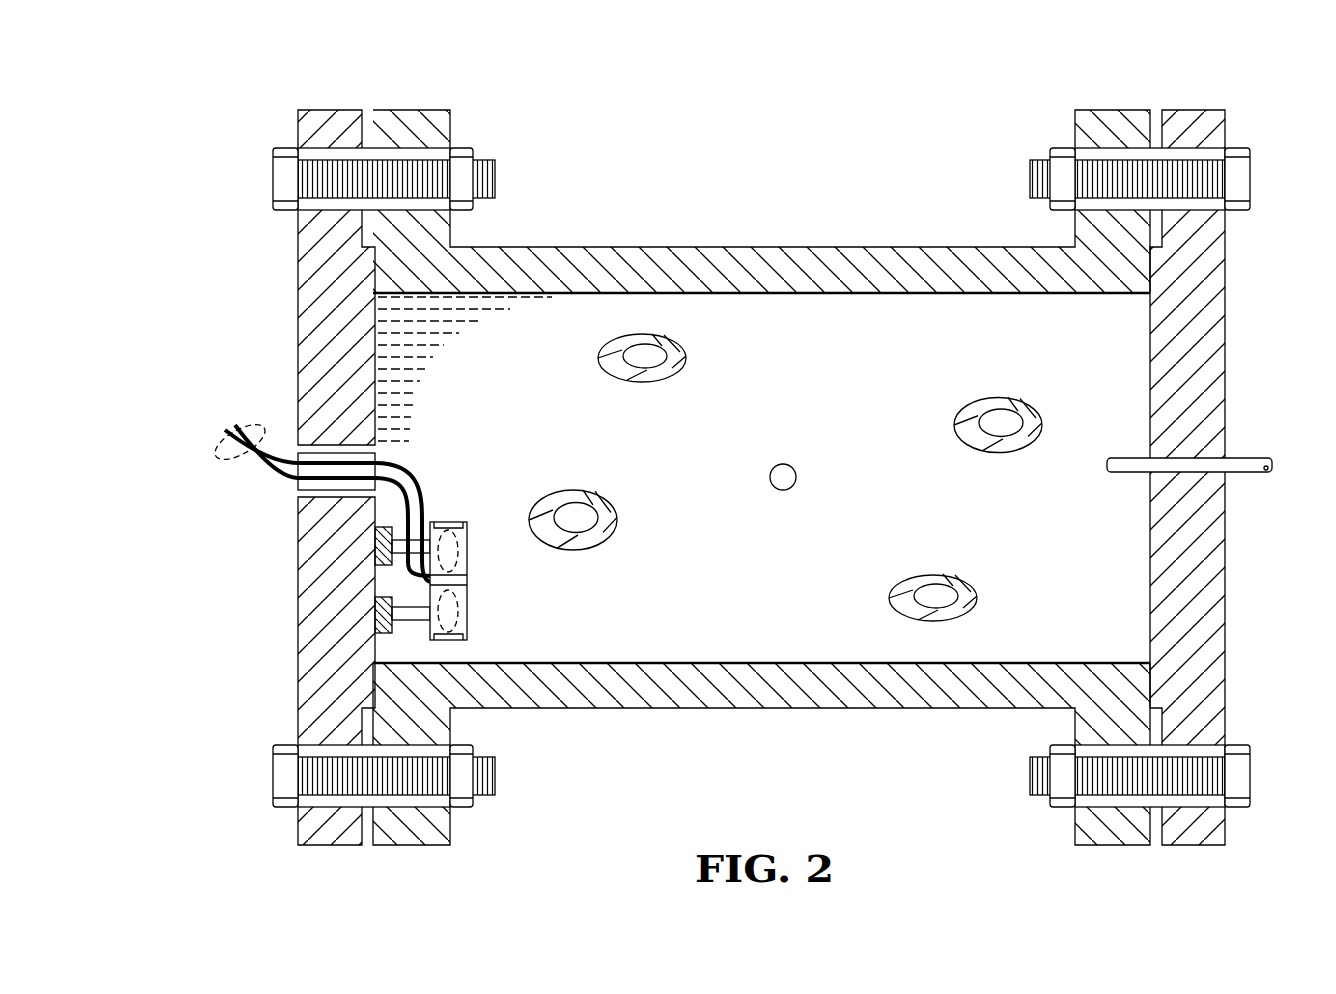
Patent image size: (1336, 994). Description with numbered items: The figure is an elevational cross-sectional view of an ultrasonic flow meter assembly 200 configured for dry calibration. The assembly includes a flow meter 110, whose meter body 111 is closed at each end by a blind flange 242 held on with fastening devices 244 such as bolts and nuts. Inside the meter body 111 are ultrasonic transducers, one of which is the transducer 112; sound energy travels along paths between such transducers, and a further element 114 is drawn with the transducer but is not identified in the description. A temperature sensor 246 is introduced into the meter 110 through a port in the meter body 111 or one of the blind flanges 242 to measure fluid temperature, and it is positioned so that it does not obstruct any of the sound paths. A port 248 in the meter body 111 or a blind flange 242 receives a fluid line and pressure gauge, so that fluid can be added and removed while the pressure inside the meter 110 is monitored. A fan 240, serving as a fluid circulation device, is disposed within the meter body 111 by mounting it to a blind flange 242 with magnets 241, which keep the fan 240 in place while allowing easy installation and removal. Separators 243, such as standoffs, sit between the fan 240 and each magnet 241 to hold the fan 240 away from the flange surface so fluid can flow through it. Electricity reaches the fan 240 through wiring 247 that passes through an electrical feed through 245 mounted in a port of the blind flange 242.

The ultrasonic flow meter assembly 200 is at (172, 113).
The flow meter 110 is at (761, 477).
The meter body 111 is at (890, 258).
The ultrasonic transducer 112 is at (785, 484).
The particle surface 114 is at (645, 356).
The fan 240 is at (455, 522).
The magnets 241 is at (375, 546).
The blind flanges 242 is at (298, 333).
The separators 243 is at (412, 622).
The fastening devices 244 is at (283, 148).
The electrical feed through 245 is at (298, 485).
The temperature sensor 246 is at (1130, 458).
The wiring 247 is at (218, 457).
The port 248 is at (785, 463).